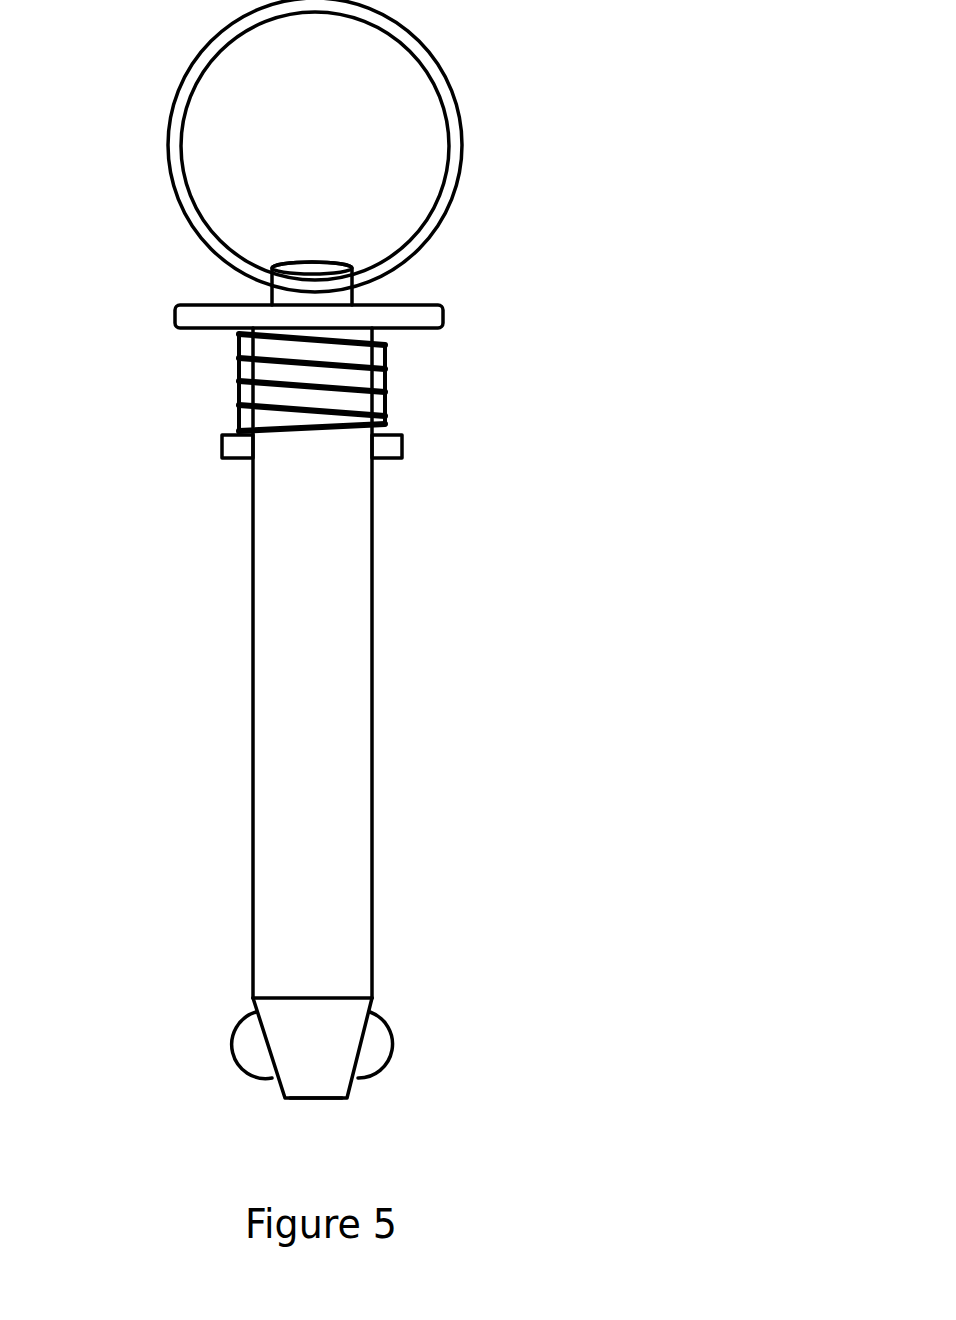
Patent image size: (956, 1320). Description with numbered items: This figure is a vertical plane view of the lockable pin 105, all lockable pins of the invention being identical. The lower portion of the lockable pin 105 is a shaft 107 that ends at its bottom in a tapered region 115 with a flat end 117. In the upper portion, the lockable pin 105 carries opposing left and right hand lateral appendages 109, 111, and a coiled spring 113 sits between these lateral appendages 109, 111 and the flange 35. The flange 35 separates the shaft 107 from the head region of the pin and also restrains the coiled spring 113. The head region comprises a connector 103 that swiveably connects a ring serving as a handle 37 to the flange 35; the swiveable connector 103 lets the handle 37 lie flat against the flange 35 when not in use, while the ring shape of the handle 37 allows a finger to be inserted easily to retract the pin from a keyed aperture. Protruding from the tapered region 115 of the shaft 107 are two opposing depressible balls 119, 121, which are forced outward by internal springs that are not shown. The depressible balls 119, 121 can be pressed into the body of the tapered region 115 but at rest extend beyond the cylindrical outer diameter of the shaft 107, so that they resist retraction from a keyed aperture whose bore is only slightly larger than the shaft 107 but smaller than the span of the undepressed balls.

The ring shaped handle 37 is at (461, 117).
The swiveable connector 103 is at (313, 262).
The flange 35 is at (445, 315).
The shaft 107 is at (373, 657).
The coiled spring 113 is at (311, 432).
The left hand lateral appendage 109 is at (222, 441).
The right hand lateral appendage 111 is at (402, 441).
The tapered region 115 is at (344, 1059).
The flat end 117 is at (315, 1099).
The depressible ball 119 is at (240, 1032).
The depressible ball 121 is at (392, 1040).
The lockable pin 105 is at (680, 455).